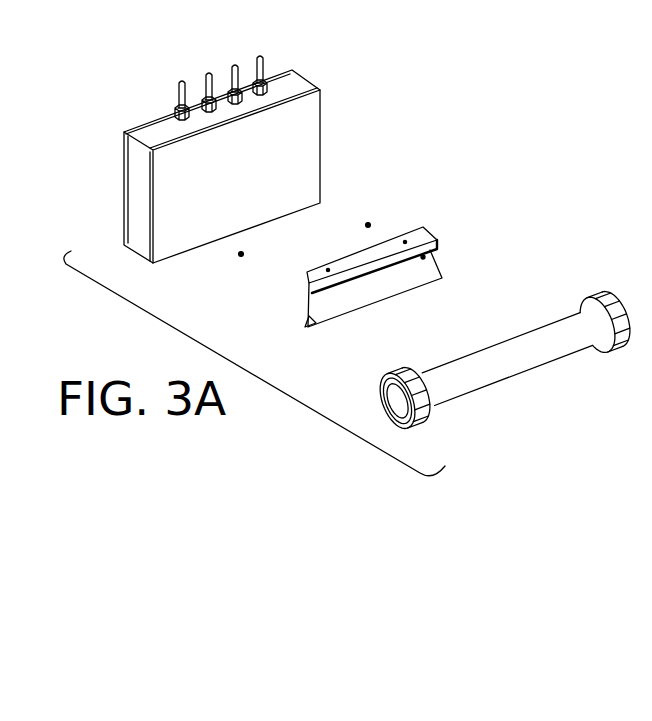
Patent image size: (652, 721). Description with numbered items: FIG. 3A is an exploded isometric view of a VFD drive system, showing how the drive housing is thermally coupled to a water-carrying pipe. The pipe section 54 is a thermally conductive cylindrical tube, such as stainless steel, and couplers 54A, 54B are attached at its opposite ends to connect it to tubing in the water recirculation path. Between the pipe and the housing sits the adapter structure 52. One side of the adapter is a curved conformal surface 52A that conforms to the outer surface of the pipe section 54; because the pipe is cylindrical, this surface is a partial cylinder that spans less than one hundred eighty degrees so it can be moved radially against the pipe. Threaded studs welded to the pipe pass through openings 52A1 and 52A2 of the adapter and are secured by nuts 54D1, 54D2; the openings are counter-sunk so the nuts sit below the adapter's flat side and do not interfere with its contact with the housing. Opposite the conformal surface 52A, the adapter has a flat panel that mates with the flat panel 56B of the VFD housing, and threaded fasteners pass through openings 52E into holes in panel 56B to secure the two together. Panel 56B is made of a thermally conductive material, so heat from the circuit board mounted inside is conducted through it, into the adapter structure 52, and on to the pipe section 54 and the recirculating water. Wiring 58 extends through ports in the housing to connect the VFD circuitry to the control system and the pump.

The adapter structure 52 is at (373, 276).
The conformal surface 52A is at (375, 295).
The opening 52A1 is at (424, 257).
The opening 52A2 is at (309, 317).
The opening 52E is at (343, 262).
The pipe section 54 is at (508, 368).
The coupler 54A is at (423, 418).
The coupler 54B is at (603, 293).
The nut 54D1 is at (368, 225).
The nut 54D2 is at (241, 256).
The flat panel 56B is at (293, 127).
The wiring 58 is at (282, 46).